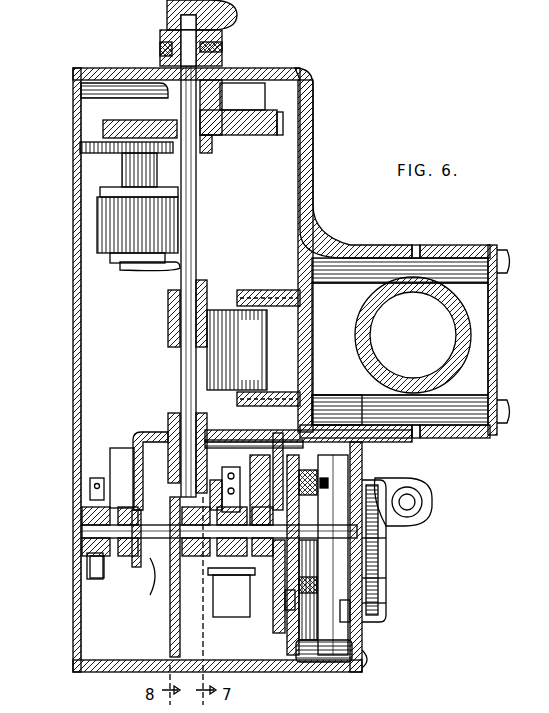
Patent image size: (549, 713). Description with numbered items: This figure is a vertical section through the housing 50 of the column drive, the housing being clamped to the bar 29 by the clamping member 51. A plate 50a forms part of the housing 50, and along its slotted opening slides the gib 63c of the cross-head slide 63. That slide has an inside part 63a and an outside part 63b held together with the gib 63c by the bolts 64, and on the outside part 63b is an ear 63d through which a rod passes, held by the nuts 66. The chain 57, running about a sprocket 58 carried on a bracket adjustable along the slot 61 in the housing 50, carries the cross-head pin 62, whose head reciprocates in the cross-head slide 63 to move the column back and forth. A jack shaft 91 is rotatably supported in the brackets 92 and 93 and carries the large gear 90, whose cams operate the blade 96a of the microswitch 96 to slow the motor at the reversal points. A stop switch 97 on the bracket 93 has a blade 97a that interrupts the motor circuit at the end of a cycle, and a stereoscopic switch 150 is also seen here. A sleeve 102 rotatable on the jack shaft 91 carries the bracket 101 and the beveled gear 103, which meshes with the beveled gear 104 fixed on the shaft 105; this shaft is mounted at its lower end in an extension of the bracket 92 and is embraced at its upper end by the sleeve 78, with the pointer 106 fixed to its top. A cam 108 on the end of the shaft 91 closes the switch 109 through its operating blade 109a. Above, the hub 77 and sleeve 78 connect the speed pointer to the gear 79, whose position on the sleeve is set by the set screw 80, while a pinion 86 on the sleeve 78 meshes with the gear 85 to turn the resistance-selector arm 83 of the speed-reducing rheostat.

The pointer 106 is at (213, 15).
The hub 77 is at (222, 55).
The set screw 80 is at (165, 95).
The sleeve 78 is at (224, 92).
The gear 79 is at (236, 136).
The pinion 86 is at (207, 152).
The gear 85 is at (100, 153).
The slot 61 is at (112, 230).
The resistance-selector arm 83 is at (162, 264).
The shaft 105 is at (195, 268).
The housing 50 is at (312, 185).
The plate 50a is at (362, 645).
The clamping member 51 is at (476, 248).
The bar 29 is at (458, 328).
The large gear 90 is at (337, 410).
The bracket 92 is at (152, 432).
The beveled gear 104 is at (152, 470).
The stop switch 97 is at (218, 432).
The bracket 93 is at (243, 443).
The cross-head pin 62 is at (328, 483).
The cross-head slide 63 is at (386, 558).
The inside part of cross-head slide 63a is at (386, 603).
The outside part of cross-head slide 63b is at (386, 538).
The gib 63c is at (386, 578).
The ear 63d is at (412, 480).
The nuts 66 is at (421, 498).
The bolts 64 is at (420, 507).
The sprocket 58 is at (362, 623).
The chain 57 is at (305, 672).
The switch 109 is at (88, 488).
The sleeve 102 is at (82, 514).
The jack shaft 91 is at (82, 533).
The cam 108 is at (82, 548).
The operating blade 109a is at (88, 565).
The bracket 101 is at (100, 580).
The beveled gear 103 is at (152, 596).
The switch blade 97a is at (193, 578).
The stereoscopic switch 150 is at (231, 592).
The microswitch 96 is at (228, 618).
The switch blade 96a is at (262, 620).